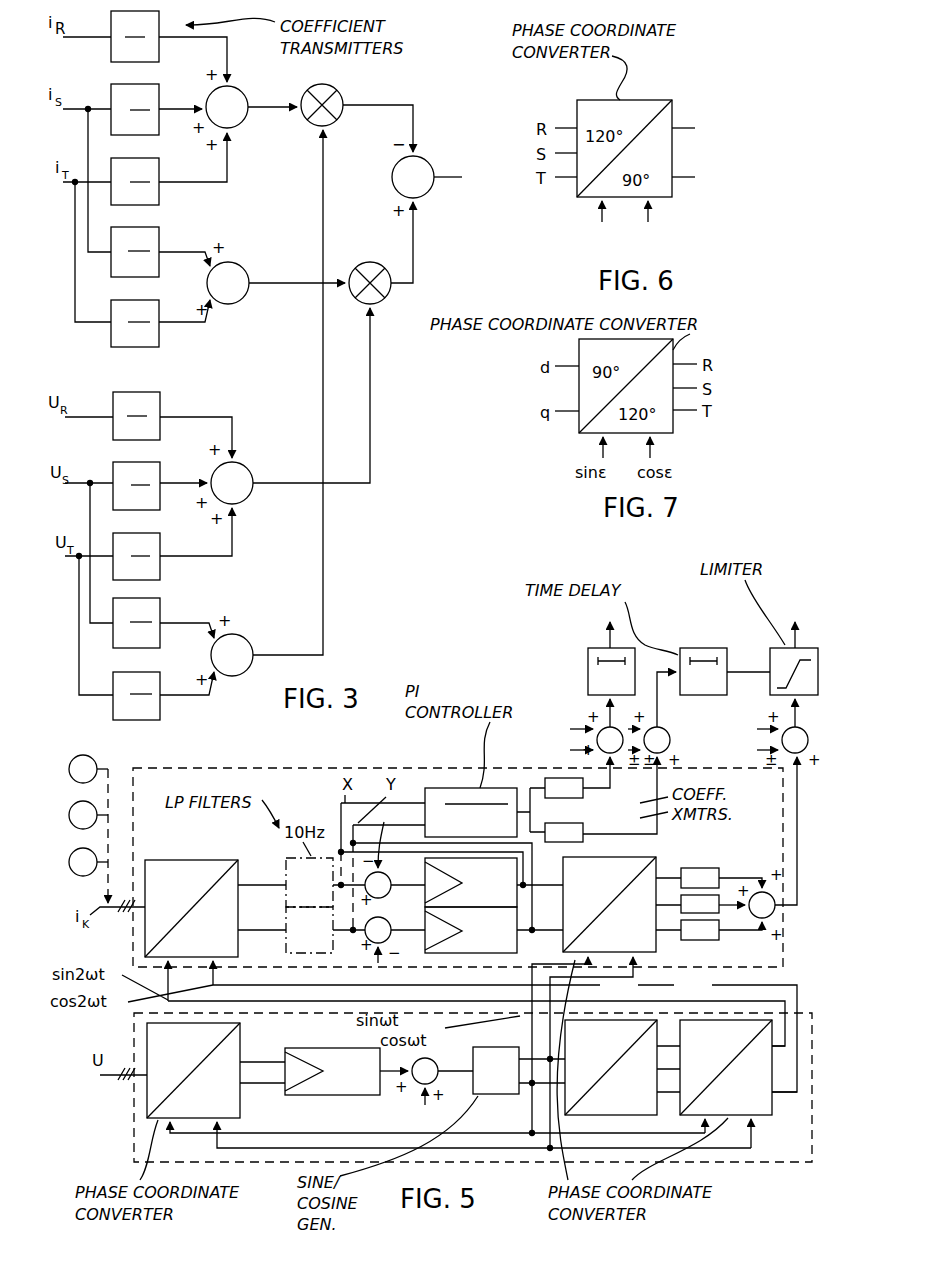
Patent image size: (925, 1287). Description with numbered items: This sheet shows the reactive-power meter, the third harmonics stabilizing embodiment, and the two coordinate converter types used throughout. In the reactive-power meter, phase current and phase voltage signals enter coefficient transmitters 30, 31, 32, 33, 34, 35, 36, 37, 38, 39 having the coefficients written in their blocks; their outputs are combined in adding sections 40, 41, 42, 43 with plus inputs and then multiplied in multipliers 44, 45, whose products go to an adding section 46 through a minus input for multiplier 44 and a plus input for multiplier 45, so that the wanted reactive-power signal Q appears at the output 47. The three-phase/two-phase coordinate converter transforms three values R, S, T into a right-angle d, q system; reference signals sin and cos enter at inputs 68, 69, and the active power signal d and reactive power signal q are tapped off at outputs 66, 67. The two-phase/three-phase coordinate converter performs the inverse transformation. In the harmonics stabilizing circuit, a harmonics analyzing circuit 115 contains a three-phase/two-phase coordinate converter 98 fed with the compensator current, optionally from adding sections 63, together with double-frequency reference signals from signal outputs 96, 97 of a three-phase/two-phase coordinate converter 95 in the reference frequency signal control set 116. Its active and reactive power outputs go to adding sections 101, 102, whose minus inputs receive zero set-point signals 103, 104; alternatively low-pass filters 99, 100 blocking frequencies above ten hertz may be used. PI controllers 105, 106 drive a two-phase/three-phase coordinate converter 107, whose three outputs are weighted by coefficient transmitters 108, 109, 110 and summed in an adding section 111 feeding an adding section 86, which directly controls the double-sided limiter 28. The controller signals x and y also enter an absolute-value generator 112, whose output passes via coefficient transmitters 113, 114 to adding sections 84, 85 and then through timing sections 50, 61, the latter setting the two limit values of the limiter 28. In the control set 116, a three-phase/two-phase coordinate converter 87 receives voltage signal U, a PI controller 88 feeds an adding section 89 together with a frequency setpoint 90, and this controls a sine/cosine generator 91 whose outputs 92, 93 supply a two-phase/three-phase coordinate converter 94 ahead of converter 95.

In FIG. 5, the double-sided limiter 28 is at (778, 648).
In FIG. 3, the coefficient transmitter 30 is at (159, 14).
In FIG. 3, the coefficient transmitter 31 is at (159, 90).
In FIG. 3, the coefficient transmitter 32 is at (159, 166).
In FIG. 3, the coefficient transmitter 33 is at (159, 236).
In FIG. 3, the coefficient transmitter 34 is at (159, 308).
In FIG. 3, the coefficient transmitter 35 is at (160, 400).
In FIG. 3, the coefficient transmitter 36 is at (160, 470).
In FIG. 3, the coefficient transmitter 37 is at (160, 541).
In FIG. 3, the coefficient transmitter 38 is at (160, 606).
In FIG. 3, the coefficient transmitter 39 is at (160, 680).
In FIG. 3, the adding section 40 is at (236, 92).
In FIG. 3, the adding section 41 is at (236, 268).
In FIG. 3, the adding section 42 is at (241, 468).
In FIG. 3, the adding section 43 is at (241, 640).
In FIG. 3, the multiplier 44 is at (338, 90).
In FIG. 3, the multiplier 45 is at (368, 262).
In FIG. 3, the adding section 46 is at (430, 163).
In FIG. 3, the output 47 is at (447, 182).
In FIG. 5, the timing section 50 is at (596, 648).
In FIG. 5, the timing section 61 is at (688, 648).
In FIG. 5, the adding section 63 is at (73, 758).
In FIG. 6, the output 66 is at (674, 118).
In FIG. 6, the output 67 is at (674, 172).
In FIG. 6, the input 68 is at (600, 202).
In FIG. 6, the input 69 is at (652, 202).
In FIG. 5, the adding section 84 is at (591, 726).
In FIG. 5, the adding section 85 is at (670, 740).
In FIG. 5, the adding section 86 is at (765, 738).
In FIG. 5, the three-phase/two-phase coordinate converter 87 is at (241, 1045).
In FIG. 5, the PI controller 88 is at (305, 1097).
In FIG. 5, the adding section 89 is at (416, 1083).
In FIG. 5, the frequency setpoint 90 is at (427, 1106).
In FIG. 5, the sine/cosine generator 91 is at (473, 1052).
In FIG. 5, the output 92 is at (519, 1056).
In FIG. 5, the output 93 is at (519, 1090).
In FIG. 5, the two-phase/three-phase coordinate converter 94 is at (635, 1020).
In FIG. 5, the three-phase/two-phase coordinate converter 95 is at (705, 1020).
In FIG. 5, the signal output 96 is at (776, 1060).
In FIG. 5, the signal output 97 is at (778, 1112).
In FIG. 5, the three-phase/two-phase coordinate converter 98 is at (180, 860).
In FIG. 5, the low-pass filter 99 is at (285, 884).
In FIG. 5, the low-pass filter 100 is at (285, 930).
In FIG. 5, the adding section 101 is at (395, 877).
In FIG. 5, the adding section 102 is at (394, 923).
In FIG. 5, the set-point signal 103 is at (393, 834).
In FIG. 5, the set-point signal 104 is at (382, 962).
In FIG. 5, the PI controller 105 is at (517, 896).
In FIG. 5, the PI controller 106 is at (517, 950).
In FIG. 5, the two-phase/three-phase coordinate converter 107 is at (630, 853).
In FIG. 5, the coefficient transmitter 108 is at (700, 861).
In FIG. 5, the coefficient transmitter 109 is at (722, 895).
In FIG. 5, the coefficient transmitter 110 is at (705, 940).
In FIG. 5, the adding section 111 is at (755, 918).
In FIG. 5, the absolute-value generator 112 is at (462, 788).
In FIG. 5, the coefficient transmitter 113 is at (585, 797).
In FIG. 5, the coefficient transmitter 114 is at (585, 830).
In FIG. 5, the harmonics analyzing circuit 115 is at (242, 768).
In FIG. 5, the reference frequency signal control set 116 is at (133, 1135).